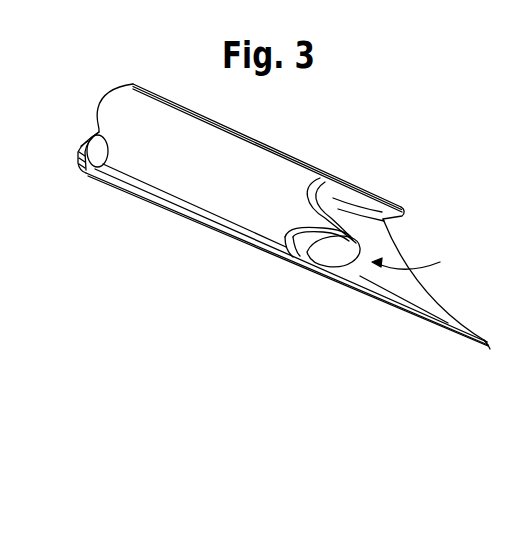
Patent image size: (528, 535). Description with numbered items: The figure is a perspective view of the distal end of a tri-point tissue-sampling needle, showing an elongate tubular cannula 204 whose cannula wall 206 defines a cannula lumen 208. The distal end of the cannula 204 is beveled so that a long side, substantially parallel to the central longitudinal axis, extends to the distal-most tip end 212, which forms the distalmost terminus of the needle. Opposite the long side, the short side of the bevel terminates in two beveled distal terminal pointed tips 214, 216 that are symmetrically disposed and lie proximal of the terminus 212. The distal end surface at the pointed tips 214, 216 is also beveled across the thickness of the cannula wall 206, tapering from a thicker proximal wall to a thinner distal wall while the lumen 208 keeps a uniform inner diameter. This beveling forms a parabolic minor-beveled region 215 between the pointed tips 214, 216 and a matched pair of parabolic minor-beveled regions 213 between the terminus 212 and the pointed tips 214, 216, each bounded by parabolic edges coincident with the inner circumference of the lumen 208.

The cannula 204 is at (170, 188).
The cannula wall 206 is at (170, 101).
The cannula lumen 208 is at (415, 253).
The distal-most tip end 212 is at (490, 350).
The parabolic minor-beveled regions 213 is at (302, 254).
The beveled distal terminal pointed tip 214 is at (403, 217).
The parabolic minor-beveled region 215 is at (320, 178).
The beveled distal terminal pointed tip 216 is at (312, 266).